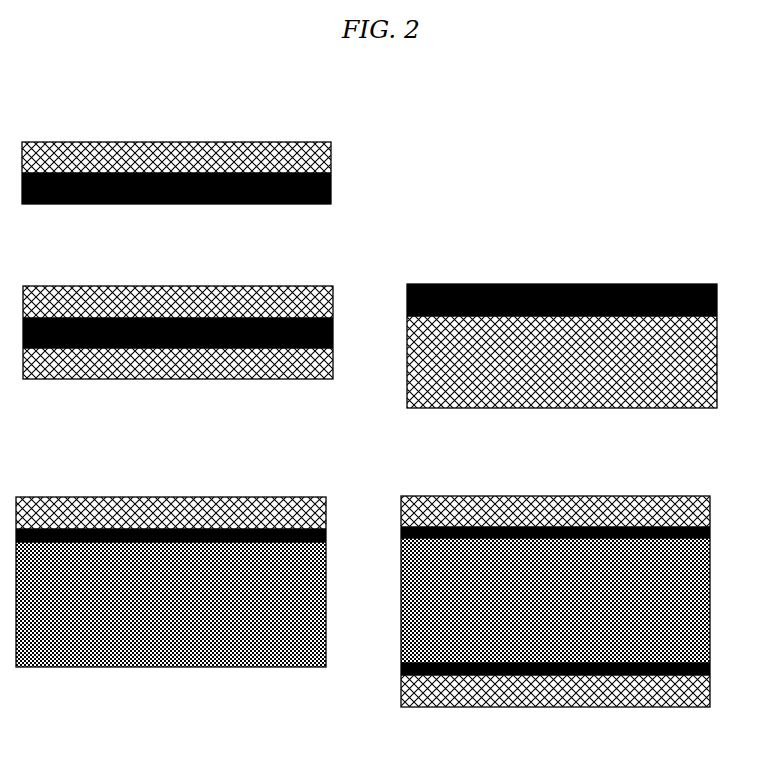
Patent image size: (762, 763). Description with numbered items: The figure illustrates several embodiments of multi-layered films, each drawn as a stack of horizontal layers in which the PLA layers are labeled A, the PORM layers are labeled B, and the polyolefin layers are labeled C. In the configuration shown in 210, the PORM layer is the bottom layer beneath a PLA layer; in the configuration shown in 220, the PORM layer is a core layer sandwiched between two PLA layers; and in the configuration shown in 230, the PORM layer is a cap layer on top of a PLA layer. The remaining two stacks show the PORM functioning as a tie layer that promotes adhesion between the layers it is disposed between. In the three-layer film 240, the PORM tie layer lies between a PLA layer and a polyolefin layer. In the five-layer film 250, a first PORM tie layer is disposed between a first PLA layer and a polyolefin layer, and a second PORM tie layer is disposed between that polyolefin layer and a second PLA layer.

The multi-layer film with PORM bottom layer 210 is at (190, 148).
The multi-layer film with PORM core layer 220 is at (191, 306).
The multi-layer film with PORM cap layer 230 is at (575, 320).
The 3-layer film 240 is at (185, 555).
The 5-layer film 250 is at (572, 575).